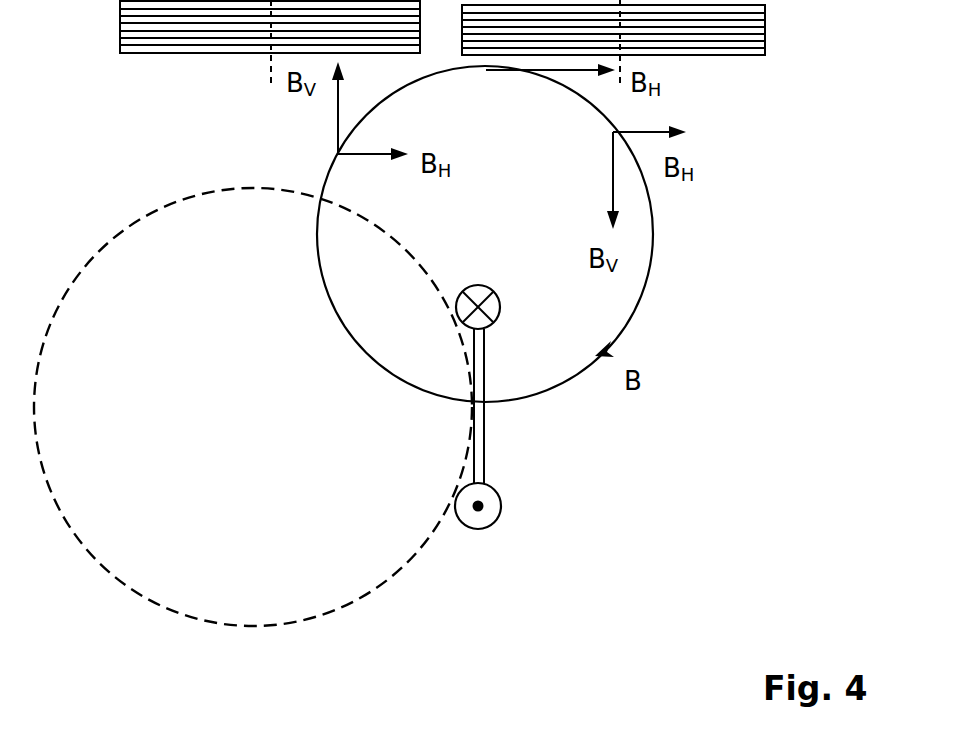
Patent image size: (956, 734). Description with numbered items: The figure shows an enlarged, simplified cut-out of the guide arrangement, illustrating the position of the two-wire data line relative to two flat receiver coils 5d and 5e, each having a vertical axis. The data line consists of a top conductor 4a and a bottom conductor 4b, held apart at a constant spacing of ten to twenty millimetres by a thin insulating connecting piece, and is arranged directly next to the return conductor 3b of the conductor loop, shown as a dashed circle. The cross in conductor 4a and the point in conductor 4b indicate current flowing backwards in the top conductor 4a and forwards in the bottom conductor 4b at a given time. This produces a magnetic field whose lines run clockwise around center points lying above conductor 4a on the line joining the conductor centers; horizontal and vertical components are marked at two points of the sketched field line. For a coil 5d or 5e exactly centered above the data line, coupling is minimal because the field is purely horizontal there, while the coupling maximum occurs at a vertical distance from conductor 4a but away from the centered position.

The receiver coil 5d is at (187, 55).
The receiver coil 5e is at (740, 56).
The top conductor of data line 4a is at (478, 284).
The bottom conductor of data line 4b is at (500, 503).
The return conductor 3b is at (337, 511).